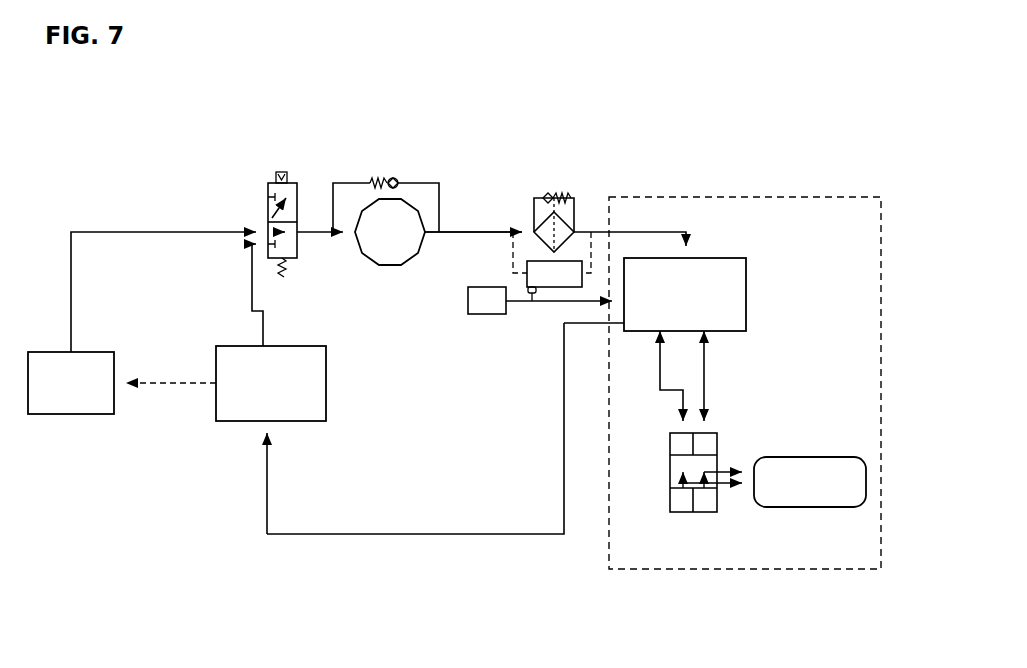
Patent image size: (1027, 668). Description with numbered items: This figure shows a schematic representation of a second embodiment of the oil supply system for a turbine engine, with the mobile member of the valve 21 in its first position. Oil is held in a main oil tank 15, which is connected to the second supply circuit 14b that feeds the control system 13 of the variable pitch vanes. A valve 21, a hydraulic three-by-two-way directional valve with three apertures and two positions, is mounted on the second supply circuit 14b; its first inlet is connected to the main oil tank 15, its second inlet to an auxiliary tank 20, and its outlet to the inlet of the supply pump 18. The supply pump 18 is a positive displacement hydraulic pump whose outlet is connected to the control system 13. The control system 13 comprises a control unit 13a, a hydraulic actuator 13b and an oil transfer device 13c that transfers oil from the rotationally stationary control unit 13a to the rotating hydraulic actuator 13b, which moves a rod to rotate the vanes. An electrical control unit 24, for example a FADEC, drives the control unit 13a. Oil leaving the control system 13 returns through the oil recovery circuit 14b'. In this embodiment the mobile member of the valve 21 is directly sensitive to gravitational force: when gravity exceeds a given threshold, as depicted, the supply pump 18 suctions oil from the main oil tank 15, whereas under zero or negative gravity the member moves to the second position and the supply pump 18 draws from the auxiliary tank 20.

The control system 13 is at (792, 197).
The control unit 13a is at (746, 298).
The hydraulic actuator 13b is at (843, 470).
The oil transfer device 13c is at (678, 500).
The second supply circuit 14b is at (472, 267).
The oil recovery circuit 14b' is at (415, 463).
The main oil tank 15 is at (53, 404).
The supply pump 18 is at (413, 213).
The auxiliary tank 20 is at (238, 415).
The valve 21 is at (268, 195).
The electrical control unit 24 is at (478, 316).